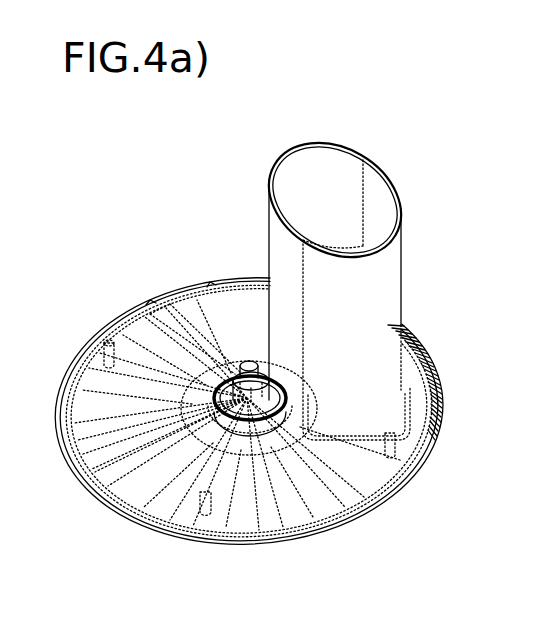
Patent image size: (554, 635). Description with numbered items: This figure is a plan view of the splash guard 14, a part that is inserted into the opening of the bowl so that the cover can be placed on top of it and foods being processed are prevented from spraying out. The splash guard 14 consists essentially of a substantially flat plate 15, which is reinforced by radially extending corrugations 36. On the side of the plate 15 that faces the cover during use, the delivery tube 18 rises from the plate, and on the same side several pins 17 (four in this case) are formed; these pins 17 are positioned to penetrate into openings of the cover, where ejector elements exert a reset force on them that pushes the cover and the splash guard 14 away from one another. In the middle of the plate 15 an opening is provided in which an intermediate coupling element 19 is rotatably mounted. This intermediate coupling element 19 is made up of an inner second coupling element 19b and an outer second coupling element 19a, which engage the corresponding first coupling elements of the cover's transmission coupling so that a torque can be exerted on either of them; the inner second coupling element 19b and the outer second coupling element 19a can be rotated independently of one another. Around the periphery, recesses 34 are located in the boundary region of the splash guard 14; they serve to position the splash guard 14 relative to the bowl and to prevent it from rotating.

The splash guard 14 is at (408, 196).
The plate 15 is at (366, 475).
The pins 17 is at (103, 352).
The delivery tube 18 is at (372, 168).
The intermediate coupling element 19 is at (232, 407).
The outer second coupling element 19a is at (255, 425).
The inner second coupling element 19b is at (249, 364).
The recesses 34 is at (432, 430).
The corrugations 36 is at (198, 335).